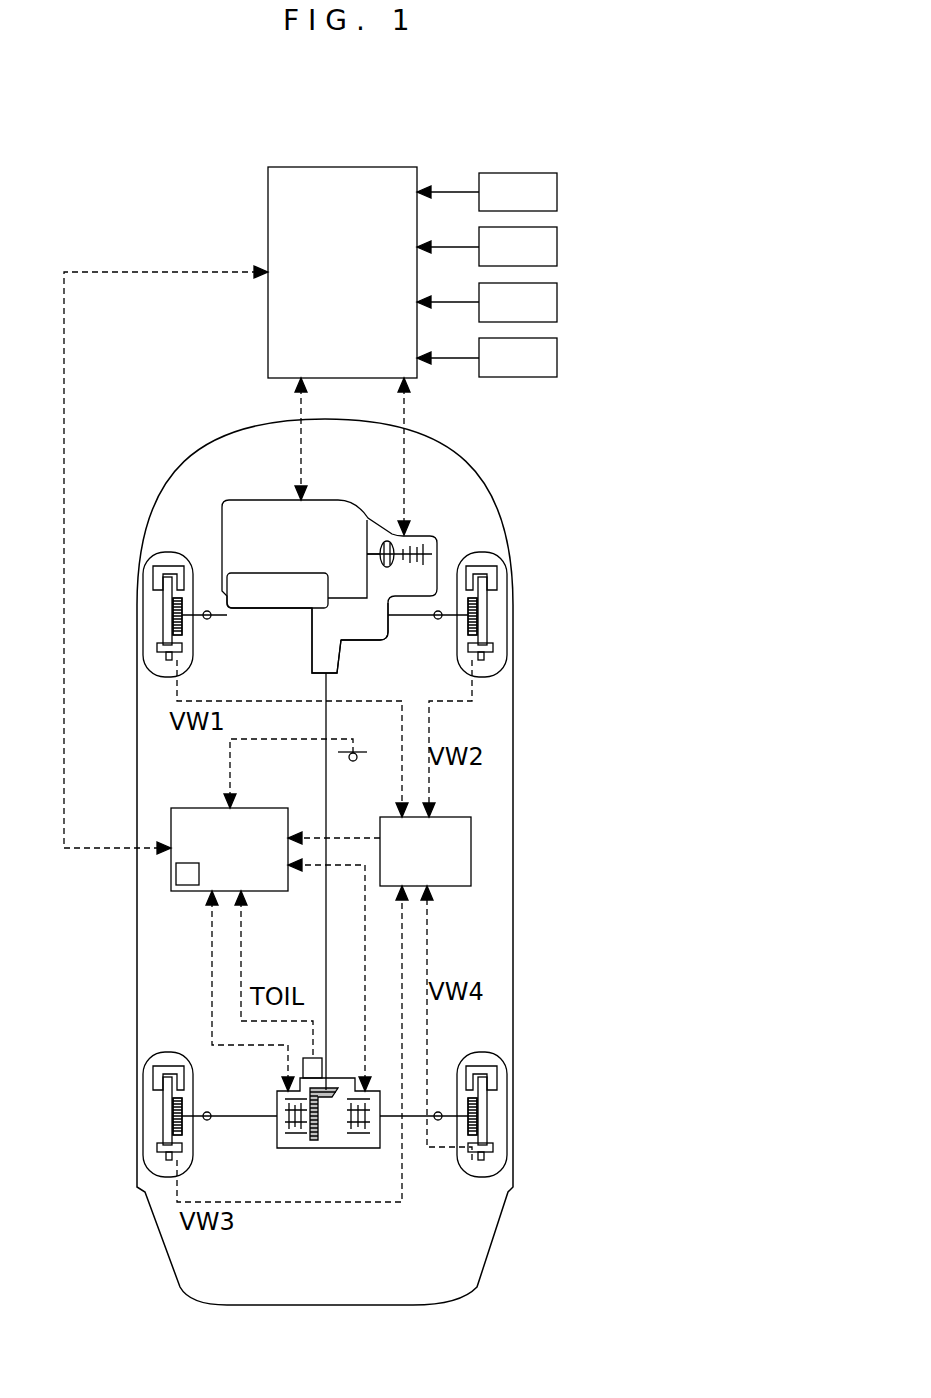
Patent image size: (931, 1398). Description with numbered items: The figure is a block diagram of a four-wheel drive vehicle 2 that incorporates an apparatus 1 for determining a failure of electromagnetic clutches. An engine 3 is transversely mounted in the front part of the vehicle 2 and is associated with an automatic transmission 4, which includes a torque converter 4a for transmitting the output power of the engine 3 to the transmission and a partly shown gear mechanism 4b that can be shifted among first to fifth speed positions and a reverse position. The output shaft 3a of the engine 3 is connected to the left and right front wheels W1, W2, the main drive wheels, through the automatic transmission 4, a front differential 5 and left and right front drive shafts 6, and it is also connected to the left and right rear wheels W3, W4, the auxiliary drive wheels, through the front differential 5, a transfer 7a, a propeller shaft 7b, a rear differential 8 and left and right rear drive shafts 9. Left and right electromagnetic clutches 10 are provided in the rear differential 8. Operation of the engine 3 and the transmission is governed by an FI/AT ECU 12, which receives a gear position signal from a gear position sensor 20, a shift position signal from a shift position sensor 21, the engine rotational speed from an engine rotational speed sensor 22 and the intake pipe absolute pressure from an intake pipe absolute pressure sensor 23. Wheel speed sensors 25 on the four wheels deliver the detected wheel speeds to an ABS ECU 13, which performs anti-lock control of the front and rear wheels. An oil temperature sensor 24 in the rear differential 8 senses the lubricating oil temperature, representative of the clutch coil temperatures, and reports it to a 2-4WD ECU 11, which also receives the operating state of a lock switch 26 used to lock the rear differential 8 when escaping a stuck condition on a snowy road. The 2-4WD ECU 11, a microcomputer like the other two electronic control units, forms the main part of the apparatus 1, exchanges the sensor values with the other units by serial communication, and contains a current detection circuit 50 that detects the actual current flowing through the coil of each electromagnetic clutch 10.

The apparatus for determining a failure of electromagnetic clutches 1 is at (600, 928).
The four-wheel drive vehicle 2 is at (513, 730).
The engine 3 is at (250, 499).
The output shaft 3a is at (374, 550).
The automatic transmission 4 is at (452, 530).
The torque converter 4a is at (387, 541).
The gear mechanism 4b is at (413, 547).
The front differential 5 is at (343, 645).
The front drive shafts 6 is at (218, 619).
The transfer 7a is at (312, 648).
The propeller shaft 7b is at (326, 968).
The rear differential 8 is at (330, 1149).
The rear drive shafts 9 is at (230, 1118).
The electromagnetic clutches 10 is at (292, 1134).
The 2-4WD ECU 11 is at (225, 808).
The FI/AT ECU 12 is at (342, 167).
The ABS ECU 13 is at (472, 853).
The gear position sensor 20 is at (557, 185).
The shift position sensor 21 is at (557, 243).
The engine rotational speed sensor 22 is at (557, 300).
The intake pipe absolute pressure sensor 23 is at (557, 356).
The oil temperature sensor 24 is at (320, 1058).
The wheel speed sensors 25 is at (162, 640).
The lock switch 26 is at (353, 762).
The current detection circuit 50 is at (182, 887).
The left front wheel W1 is at (163, 553).
The right front wheel W2 is at (497, 553).
The left rear wheel W3 is at (163, 1053).
The right rear wheel W4 is at (497, 1053).